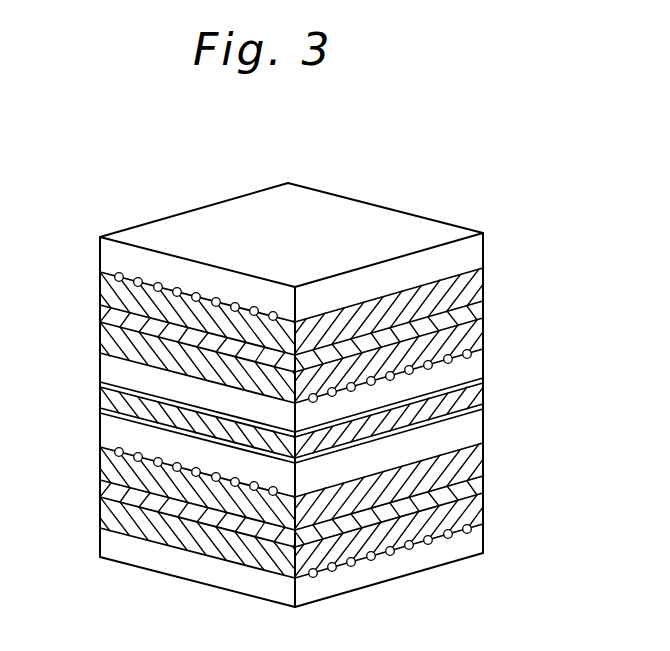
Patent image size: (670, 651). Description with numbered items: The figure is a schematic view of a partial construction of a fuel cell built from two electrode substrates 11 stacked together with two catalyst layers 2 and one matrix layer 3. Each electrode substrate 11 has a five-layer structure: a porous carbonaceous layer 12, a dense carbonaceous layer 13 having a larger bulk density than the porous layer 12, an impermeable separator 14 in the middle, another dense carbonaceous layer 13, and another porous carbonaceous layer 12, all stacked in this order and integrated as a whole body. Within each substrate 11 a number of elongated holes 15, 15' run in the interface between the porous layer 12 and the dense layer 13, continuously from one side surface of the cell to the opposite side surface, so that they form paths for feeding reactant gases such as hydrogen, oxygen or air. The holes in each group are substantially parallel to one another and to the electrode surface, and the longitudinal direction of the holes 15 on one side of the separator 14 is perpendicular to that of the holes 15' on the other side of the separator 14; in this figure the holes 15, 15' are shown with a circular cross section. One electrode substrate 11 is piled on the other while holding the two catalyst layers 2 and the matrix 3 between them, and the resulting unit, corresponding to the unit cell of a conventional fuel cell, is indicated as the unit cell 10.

The catalyst layer 2 is at (475, 383).
The matrix layer 3 is at (483, 400).
The unit cell 10 is at (533, 477).
The electrode substrate 11 is at (92, 235).
The porous carbonaceous layer 12 is at (483, 253).
The dense carbonaceous layer 13 is at (483, 282).
The impermeable separator 14 is at (483, 308).
The elongated holes 15 is at (290, 395).
The elongated holes 15' is at (260, 357).